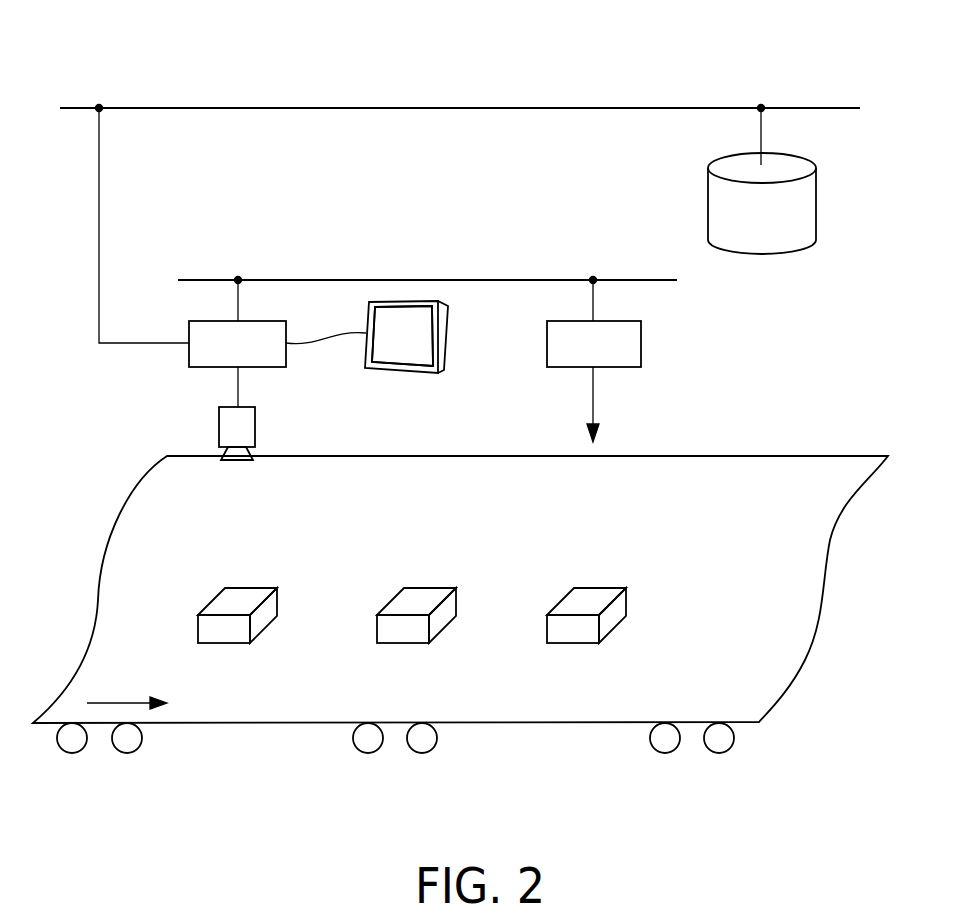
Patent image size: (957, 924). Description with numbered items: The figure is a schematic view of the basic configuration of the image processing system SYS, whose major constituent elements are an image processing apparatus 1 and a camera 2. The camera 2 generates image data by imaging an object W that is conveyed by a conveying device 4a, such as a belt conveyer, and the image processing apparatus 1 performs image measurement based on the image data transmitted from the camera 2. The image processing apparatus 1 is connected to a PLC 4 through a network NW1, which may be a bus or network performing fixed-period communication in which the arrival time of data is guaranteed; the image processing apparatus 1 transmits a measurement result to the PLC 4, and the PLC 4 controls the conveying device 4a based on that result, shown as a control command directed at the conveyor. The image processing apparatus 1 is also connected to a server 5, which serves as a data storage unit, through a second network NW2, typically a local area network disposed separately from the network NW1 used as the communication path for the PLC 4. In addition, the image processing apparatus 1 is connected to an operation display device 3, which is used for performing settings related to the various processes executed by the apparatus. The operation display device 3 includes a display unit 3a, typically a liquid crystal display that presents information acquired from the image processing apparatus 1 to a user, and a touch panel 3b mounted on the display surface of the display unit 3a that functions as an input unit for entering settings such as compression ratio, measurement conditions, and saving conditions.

The image processing system SYS is at (801, 59).
The network NW1 is at (433, 104).
The network NW2 is at (433, 278).
The image processing apparatus 1 is at (265, 321).
The camera 2 is at (255, 428).
The operation display device 3 is at (449, 320).
The display unit 3a is at (420, 357).
The touch panel 3b is at (452, 337).
The PLC 4 is at (617, 321).
The conveying device 4a is at (723, 480).
The server 5 is at (785, 156).
The object W is at (225, 635).